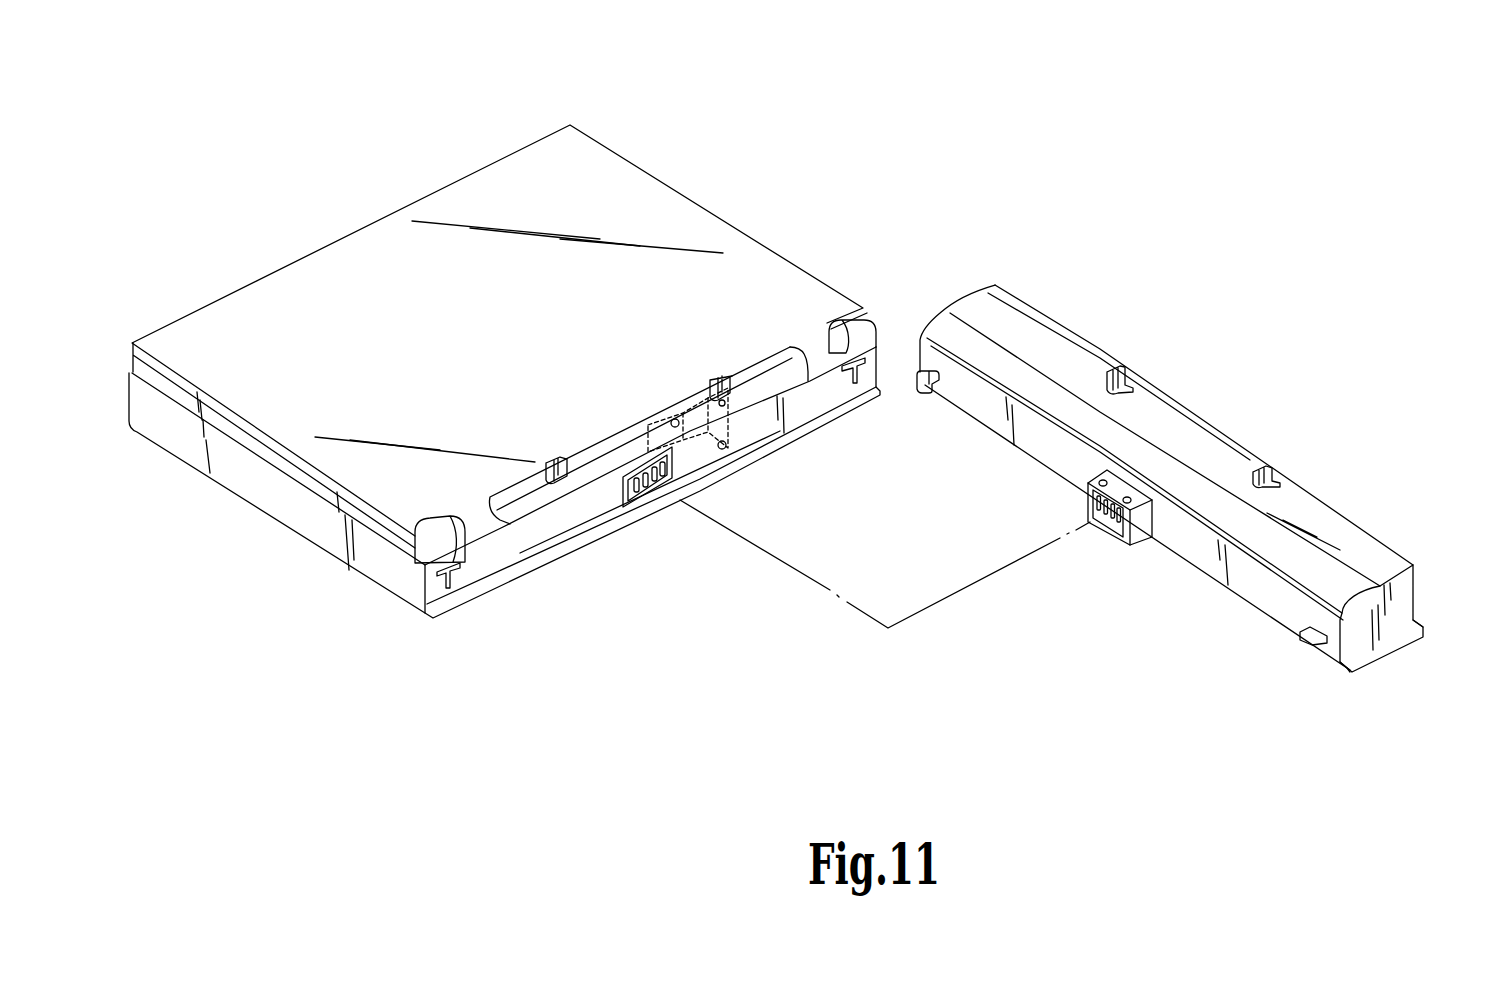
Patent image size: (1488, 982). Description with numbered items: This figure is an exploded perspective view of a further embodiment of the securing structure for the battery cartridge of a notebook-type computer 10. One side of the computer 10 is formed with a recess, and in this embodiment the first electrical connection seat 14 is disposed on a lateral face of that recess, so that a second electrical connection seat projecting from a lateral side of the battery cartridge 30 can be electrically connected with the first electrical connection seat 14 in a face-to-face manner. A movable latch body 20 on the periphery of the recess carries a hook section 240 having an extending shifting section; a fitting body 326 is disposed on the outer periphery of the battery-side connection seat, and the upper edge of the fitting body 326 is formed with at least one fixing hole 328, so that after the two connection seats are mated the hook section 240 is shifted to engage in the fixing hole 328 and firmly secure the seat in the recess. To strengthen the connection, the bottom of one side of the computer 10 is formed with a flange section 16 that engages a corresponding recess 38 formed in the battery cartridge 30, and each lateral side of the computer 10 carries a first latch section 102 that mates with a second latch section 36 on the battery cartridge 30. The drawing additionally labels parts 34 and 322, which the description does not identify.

The notebook-type computer 10 is at (762, 274).
The first electrical connection seat 14 is at (658, 489).
The flange section 16 is at (434, 621).
The movable latch body 20 is at (719, 377).
The battery cartridge 30 is at (1350, 537).
The hooks 34 is at (1118, 367).
The second latch section 36 is at (922, 387).
The recess 38 is at (1343, 668).
The first latch section 102 is at (456, 576).
The hook section 240 is at (663, 418).
The battery connector 322 is at (1107, 531).
The fitting body 326 is at (1137, 528).
The fixing hole 328 is at (1099, 482).